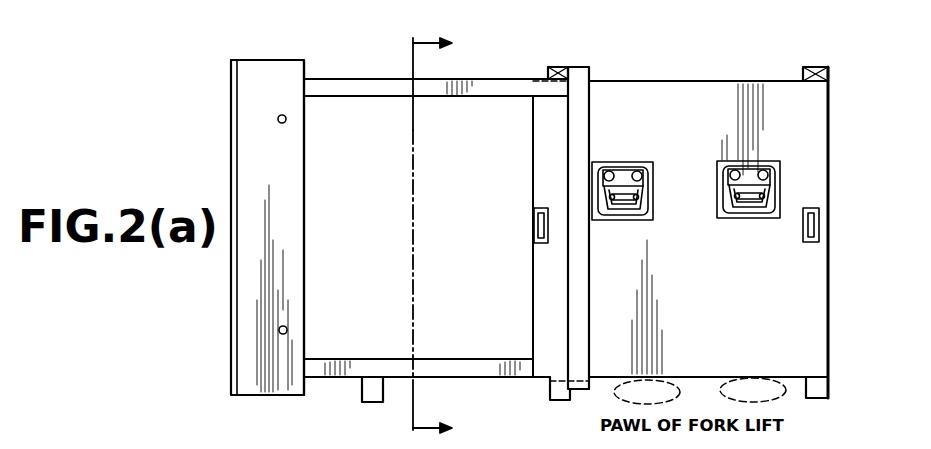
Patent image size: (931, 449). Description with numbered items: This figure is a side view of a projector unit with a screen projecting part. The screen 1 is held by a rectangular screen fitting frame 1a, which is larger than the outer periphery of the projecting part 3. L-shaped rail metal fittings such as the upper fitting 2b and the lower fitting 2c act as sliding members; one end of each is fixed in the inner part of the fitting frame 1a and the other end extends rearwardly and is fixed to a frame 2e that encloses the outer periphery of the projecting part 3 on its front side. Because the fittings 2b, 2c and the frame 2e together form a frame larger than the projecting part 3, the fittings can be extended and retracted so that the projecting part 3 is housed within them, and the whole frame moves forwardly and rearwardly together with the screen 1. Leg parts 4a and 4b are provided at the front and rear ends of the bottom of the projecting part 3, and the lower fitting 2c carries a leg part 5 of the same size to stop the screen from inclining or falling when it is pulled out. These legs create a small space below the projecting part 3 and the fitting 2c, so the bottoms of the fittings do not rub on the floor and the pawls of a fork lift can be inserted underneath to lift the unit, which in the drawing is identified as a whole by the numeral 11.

The screen 1 is at (233, 160).
The screen fitting frame 1a is at (270, 76).
The L-shaped rail metal fitting 2b is at (362, 88).
The L-shaped rail metal fitting 2c is at (371, 370).
The frame 2e is at (580, 118).
The projecting part 3 is at (712, 95).
The leg part 4a is at (558, 391).
The leg part 4b is at (820, 388).
The leg part 5 is at (368, 394).
The container transport frame 11 is at (241, 405).